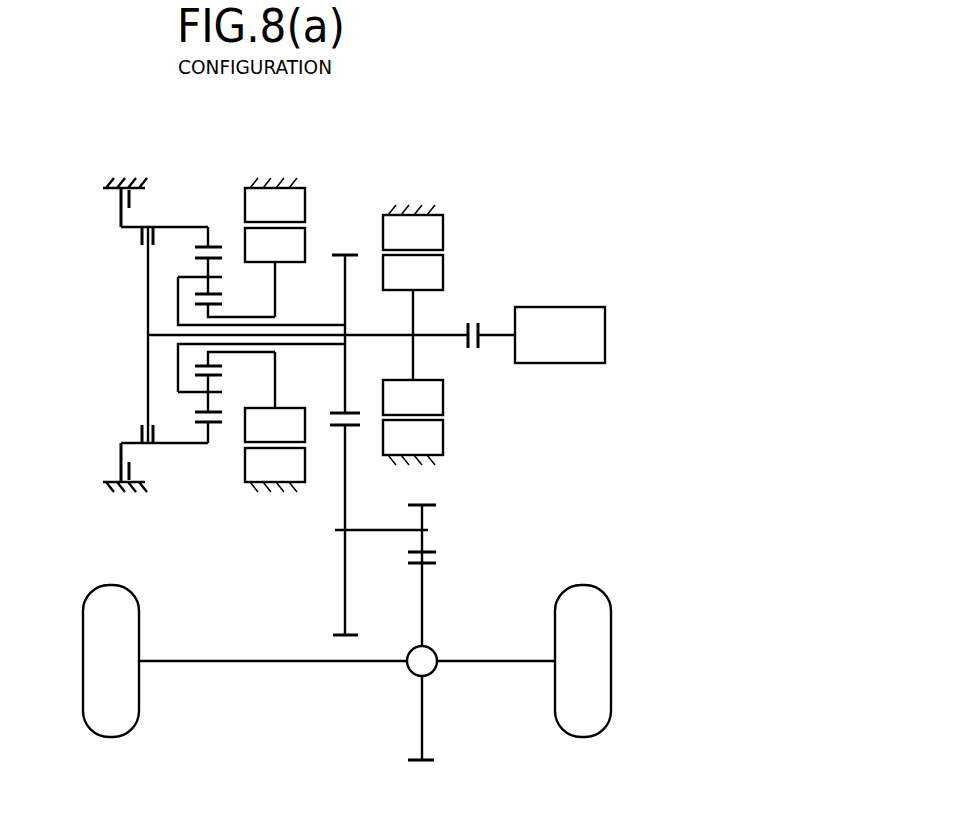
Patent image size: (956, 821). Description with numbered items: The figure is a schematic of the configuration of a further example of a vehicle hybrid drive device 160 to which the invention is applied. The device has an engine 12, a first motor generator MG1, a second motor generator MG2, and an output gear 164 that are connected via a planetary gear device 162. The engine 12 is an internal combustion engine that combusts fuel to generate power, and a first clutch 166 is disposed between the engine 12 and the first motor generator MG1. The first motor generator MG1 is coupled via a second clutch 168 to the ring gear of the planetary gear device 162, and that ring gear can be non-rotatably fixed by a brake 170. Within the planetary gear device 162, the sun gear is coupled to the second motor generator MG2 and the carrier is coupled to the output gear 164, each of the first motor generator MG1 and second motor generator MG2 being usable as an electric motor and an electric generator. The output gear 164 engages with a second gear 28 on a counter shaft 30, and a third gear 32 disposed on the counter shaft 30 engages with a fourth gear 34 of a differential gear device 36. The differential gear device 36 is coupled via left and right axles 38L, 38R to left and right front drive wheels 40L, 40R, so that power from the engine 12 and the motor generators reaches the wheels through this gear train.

The vehicle hybrid drive device 160 is at (550, 147).
The brake 170 is at (103, 199).
The second clutch 168 is at (126, 247).
The planetary gear device 162 is at (210, 210).
The second motor generator MG2 is at (320, 196).
The output gear 164 is at (345, 254).
The first clutch 166 is at (478, 303).
The engine 12 is at (570, 318).
The first motor generator MG1 is at (458, 224).
The counter shaft 30 is at (368, 528).
The second gear 28 is at (352, 639).
The third gear 32 is at (428, 504).
The differential gear device 36 is at (412, 665).
The fourth gear 34 is at (425, 763).
The left axle 38L is at (205, 663).
The right axle 38R is at (492, 663).
The left front drive wheel 40L is at (107, 718).
The right front drive wheel 40R is at (582, 718).